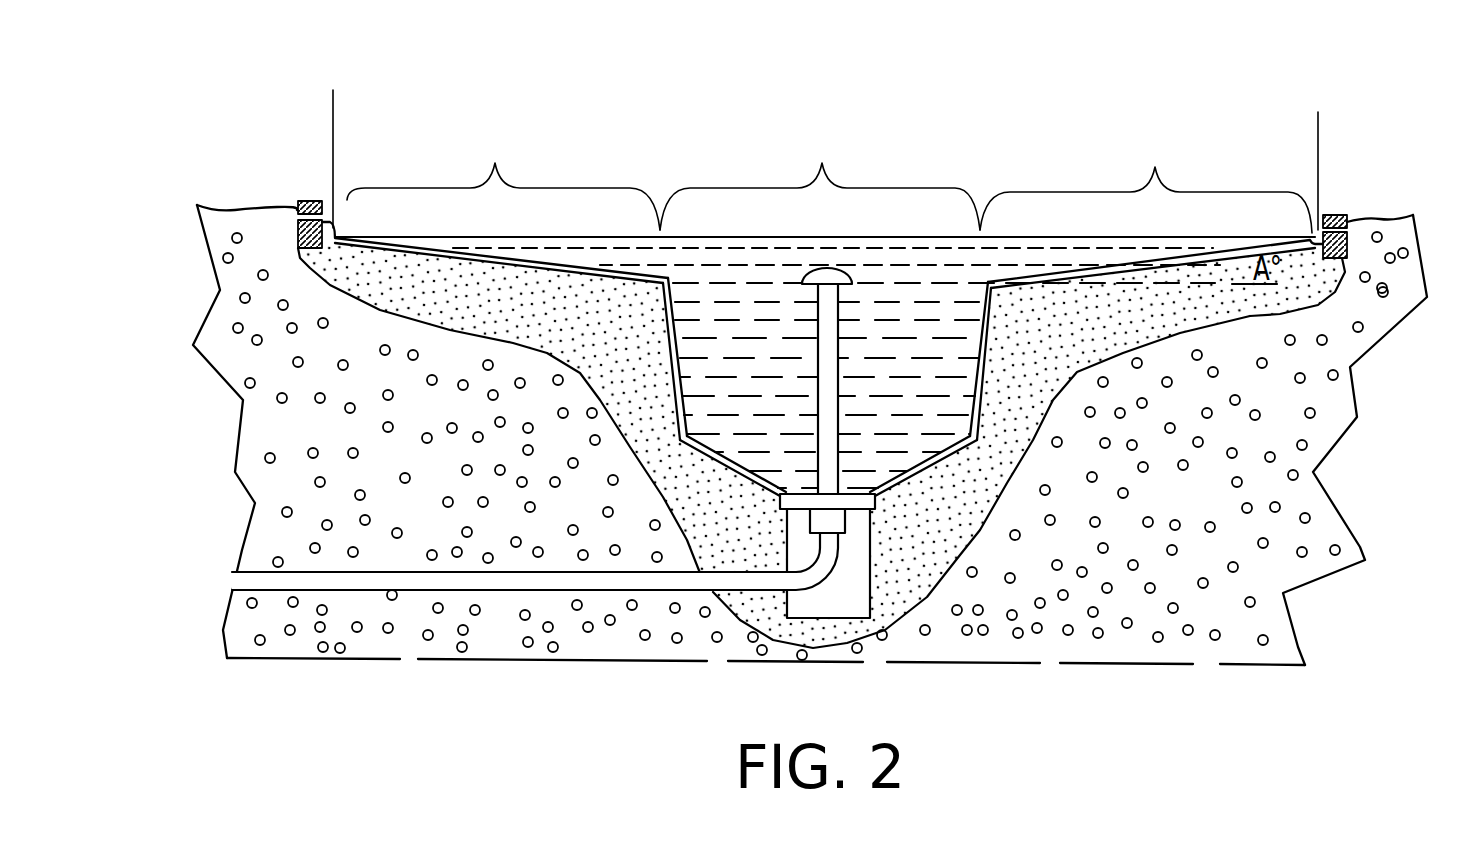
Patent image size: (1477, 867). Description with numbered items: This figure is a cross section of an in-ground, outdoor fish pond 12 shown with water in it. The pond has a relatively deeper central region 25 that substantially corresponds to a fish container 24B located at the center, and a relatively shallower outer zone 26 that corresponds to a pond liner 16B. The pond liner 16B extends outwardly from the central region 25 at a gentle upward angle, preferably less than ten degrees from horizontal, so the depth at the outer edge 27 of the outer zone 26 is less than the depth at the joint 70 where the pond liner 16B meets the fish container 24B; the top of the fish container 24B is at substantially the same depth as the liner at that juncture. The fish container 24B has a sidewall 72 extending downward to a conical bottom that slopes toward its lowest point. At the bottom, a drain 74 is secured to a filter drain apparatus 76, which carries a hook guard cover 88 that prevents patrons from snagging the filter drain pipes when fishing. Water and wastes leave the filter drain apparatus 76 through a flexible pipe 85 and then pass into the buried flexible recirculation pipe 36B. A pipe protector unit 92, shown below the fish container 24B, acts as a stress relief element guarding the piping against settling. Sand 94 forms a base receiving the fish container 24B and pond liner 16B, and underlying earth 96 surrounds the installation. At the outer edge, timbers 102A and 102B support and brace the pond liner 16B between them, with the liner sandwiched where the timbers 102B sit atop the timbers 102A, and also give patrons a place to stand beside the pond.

The fish pond 12 is at (960, 130).
The pond liner 16B is at (473, 253).
The fish container 24B is at (1001, 342).
The central region 25 is at (820, 175).
The outer zone 26 is at (829, 176).
The outer edge 27 is at (819, 137).
The recirculation pipe 36B is at (502, 593).
The joint 70 is at (993, 282).
The sidewall 72 is at (670, 372).
The drain 74 is at (875, 518).
The filter drain apparatus 76 is at (815, 333).
The flexible pipe 85 is at (840, 538).
The hook guard cover 88 is at (850, 283).
The pipe protector unit 92 is at (873, 548).
The sand 94 is at (568, 338).
The underlying earth 96 is at (1225, 515).
The timbers 102A is at (290, 228).
The timbers 102B is at (298, 203).